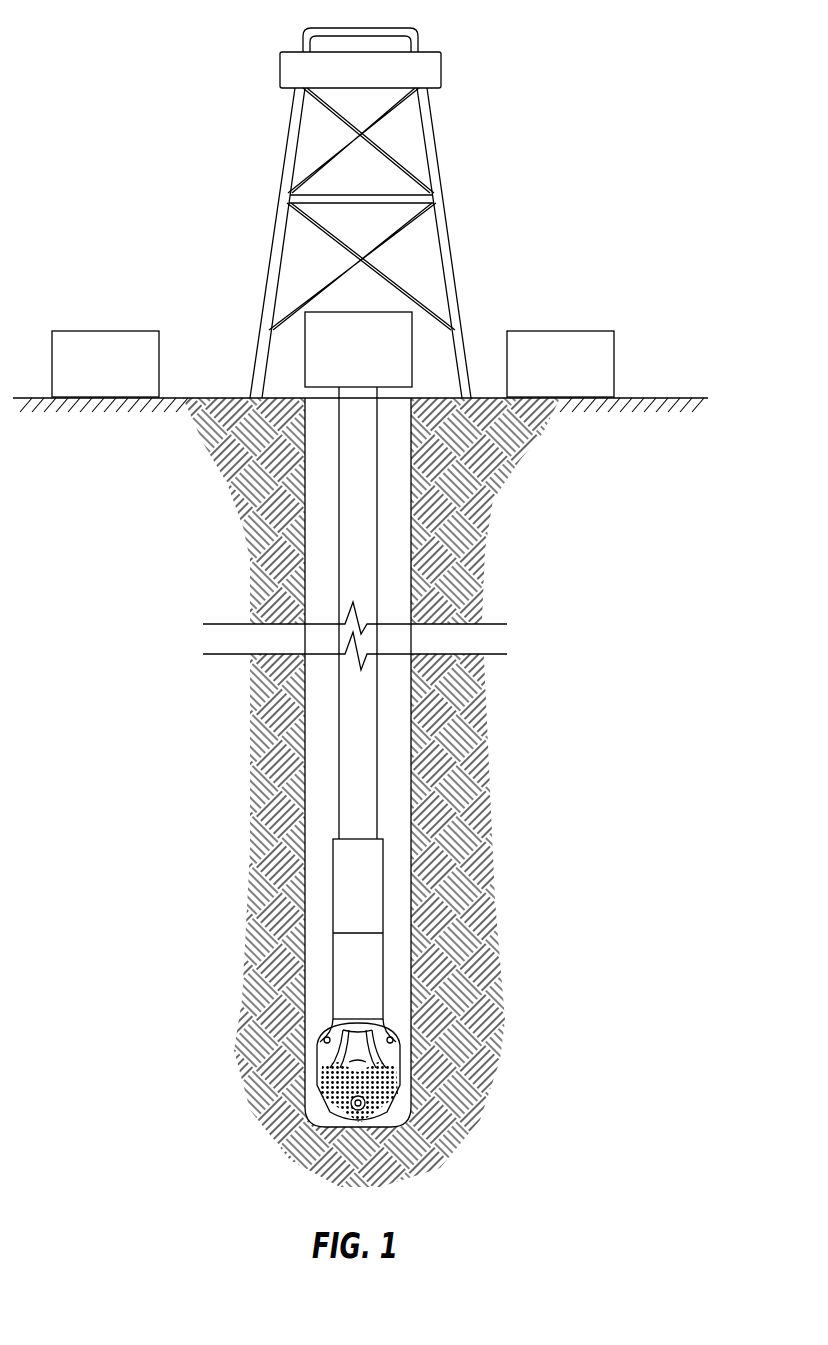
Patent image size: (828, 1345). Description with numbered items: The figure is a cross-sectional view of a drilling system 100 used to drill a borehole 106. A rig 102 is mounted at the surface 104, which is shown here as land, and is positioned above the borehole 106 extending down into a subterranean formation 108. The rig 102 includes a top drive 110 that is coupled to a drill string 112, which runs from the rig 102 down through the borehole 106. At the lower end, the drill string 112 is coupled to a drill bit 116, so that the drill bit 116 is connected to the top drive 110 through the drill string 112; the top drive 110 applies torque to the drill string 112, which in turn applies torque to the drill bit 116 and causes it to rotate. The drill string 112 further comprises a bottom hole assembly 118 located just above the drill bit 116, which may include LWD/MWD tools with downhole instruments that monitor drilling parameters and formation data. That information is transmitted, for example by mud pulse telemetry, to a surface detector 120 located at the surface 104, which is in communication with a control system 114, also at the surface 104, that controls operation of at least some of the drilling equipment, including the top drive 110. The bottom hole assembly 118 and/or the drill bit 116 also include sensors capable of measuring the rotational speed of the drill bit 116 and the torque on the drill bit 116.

The drilling system 100 is at (636, 72).
The rig 102 is at (437, 143).
The surface 104 is at (662, 397).
The borehole 106 is at (305, 573).
The subterranean formation 108 is at (90, 626).
The top drive 110 is at (337, 362).
The drill string 112 is at (532, 1043).
The control system 114 is at (84, 378).
The drill bit 116 is at (323, 1070).
The bottom hole assembly 118 is at (322, 1019).
The surface detector 120 is at (542, 378).